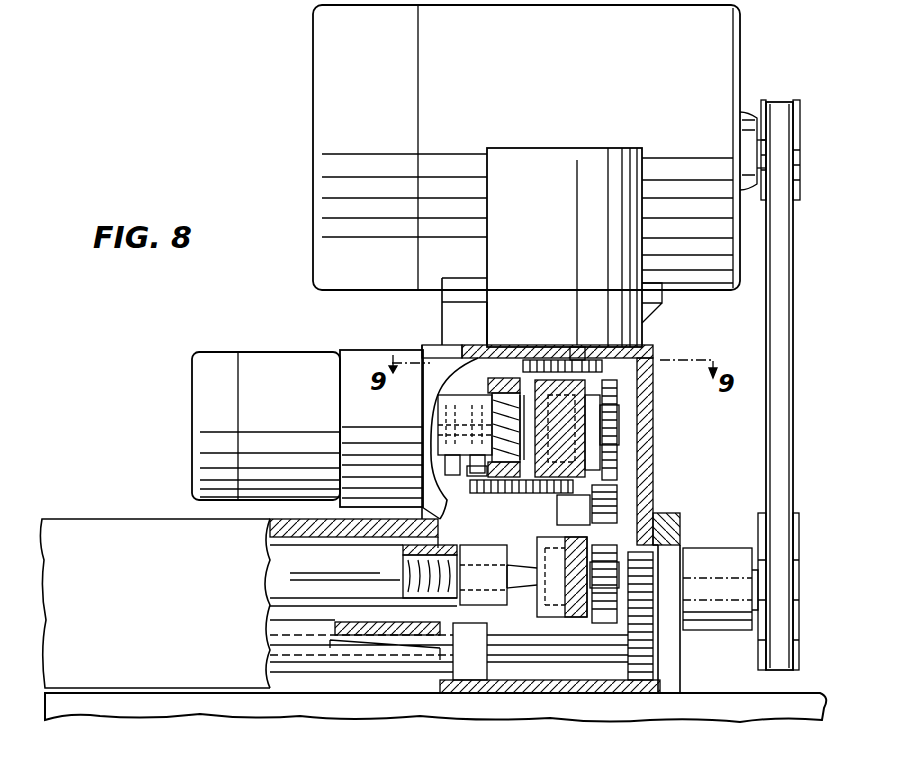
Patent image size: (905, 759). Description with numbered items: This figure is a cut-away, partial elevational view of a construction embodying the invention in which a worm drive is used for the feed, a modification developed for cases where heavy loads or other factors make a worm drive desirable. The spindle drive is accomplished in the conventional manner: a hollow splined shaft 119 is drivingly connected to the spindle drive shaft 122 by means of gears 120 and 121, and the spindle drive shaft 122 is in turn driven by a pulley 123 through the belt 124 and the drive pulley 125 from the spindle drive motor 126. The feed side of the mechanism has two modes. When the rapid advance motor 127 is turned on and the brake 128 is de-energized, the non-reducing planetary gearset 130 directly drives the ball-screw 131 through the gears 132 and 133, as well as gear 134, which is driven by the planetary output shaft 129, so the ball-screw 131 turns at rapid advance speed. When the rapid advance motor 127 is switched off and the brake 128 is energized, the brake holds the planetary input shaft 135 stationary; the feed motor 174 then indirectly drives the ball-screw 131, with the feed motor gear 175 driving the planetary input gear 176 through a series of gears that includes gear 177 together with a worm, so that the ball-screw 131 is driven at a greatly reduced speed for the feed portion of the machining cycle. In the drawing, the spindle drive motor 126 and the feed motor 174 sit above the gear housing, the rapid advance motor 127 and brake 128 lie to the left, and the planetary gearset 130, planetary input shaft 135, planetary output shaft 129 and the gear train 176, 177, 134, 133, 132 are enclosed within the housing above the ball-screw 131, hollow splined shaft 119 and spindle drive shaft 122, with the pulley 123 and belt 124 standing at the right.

The hollow splined shaft 119 is at (282, 663).
The gear 120 is at (655, 677).
The gear 121 is at (656, 556).
The spindle drive shaft 122 is at (708, 578).
The pulley 123 is at (797, 535).
The belt 124 is at (790, 393).
The drive pulley 125 is at (800, 148).
The spindle drive motor 126 is at (743, 60).
The rapid advance motor 127 is at (252, 352).
The brake 128 is at (378, 330).
The planetary output shaft 129 is at (537, 493).
The non-reducing planetary gearset 130 is at (472, 476).
The ball-screw 131 is at (285, 568).
The gear 132 is at (622, 535).
The gear 133 is at (620, 480).
The gear 134 is at (617, 398).
The planetary input shaft 135 is at (436, 404).
The feed motor 174 is at (642, 225).
The feed motor gear 175 is at (492, 382).
The planetary input gear 176 is at (515, 358).
The gear 177 is at (602, 366).